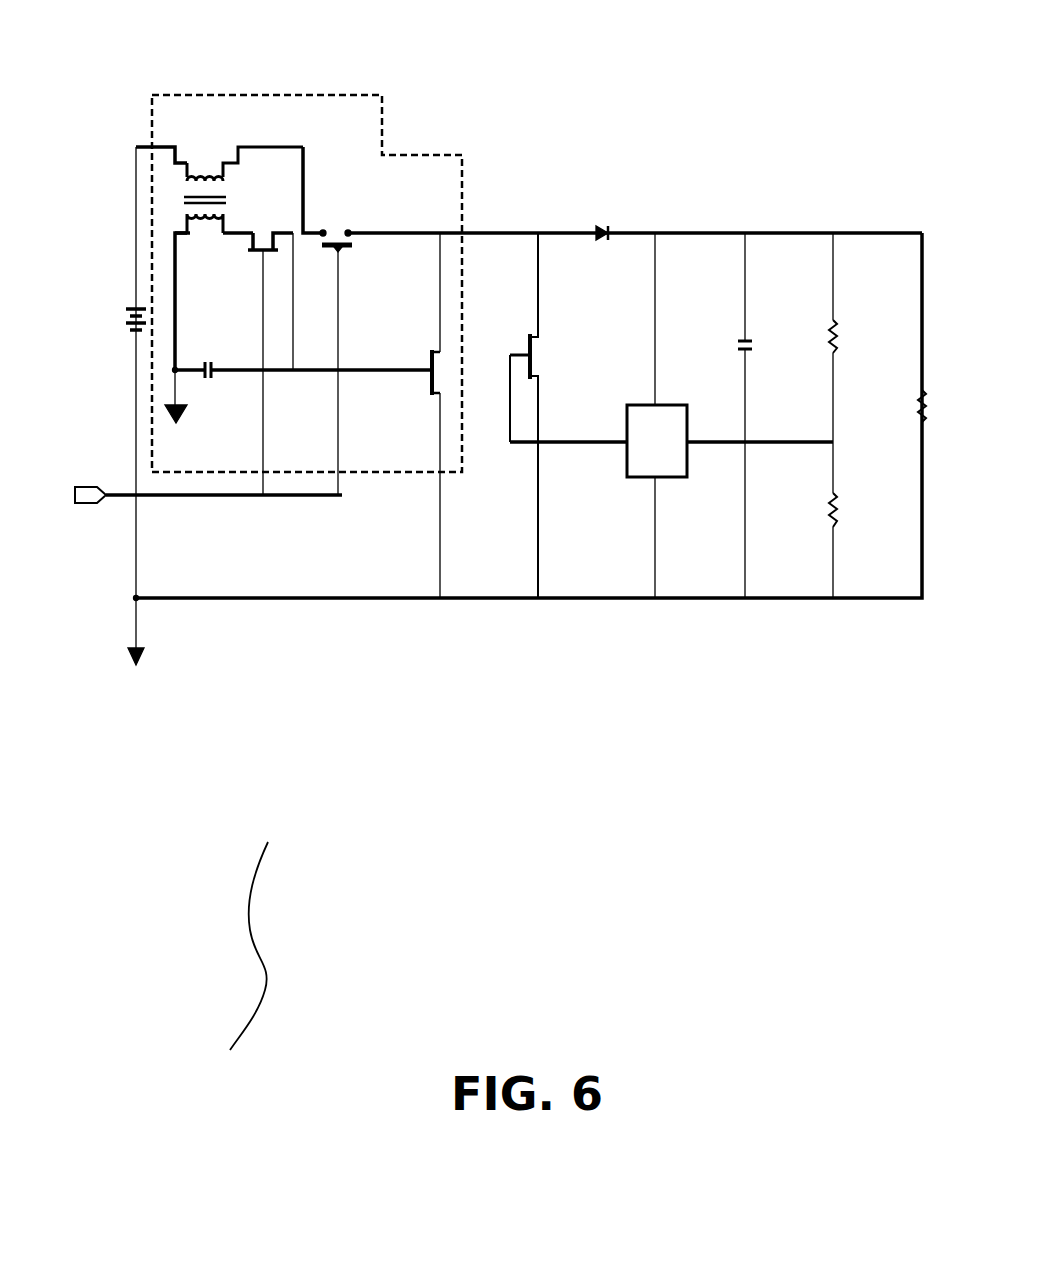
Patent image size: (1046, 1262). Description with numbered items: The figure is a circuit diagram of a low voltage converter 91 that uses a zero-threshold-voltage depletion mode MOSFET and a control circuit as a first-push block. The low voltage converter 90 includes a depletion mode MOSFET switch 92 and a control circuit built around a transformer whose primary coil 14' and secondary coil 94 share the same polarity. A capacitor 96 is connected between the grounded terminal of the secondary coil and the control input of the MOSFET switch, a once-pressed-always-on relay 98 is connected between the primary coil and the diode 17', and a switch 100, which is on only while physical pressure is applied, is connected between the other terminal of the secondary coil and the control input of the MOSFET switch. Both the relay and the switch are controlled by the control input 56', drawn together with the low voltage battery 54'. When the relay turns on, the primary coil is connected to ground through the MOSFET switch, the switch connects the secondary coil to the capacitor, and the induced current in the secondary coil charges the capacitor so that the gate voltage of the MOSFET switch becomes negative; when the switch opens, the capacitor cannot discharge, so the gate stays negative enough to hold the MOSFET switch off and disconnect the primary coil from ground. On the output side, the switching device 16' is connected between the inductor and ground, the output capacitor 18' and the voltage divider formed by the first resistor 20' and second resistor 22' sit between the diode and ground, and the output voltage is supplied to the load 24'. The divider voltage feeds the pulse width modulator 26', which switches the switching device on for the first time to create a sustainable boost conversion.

The primary coil L1 14' is at (257, 191).
The switch SW 100 is at (282, 203).
The once-pressed-always-on RELAY 98 is at (362, 207).
The low voltage converter 90 is at (462, 187).
The low voltage battery 54' is at (98, 200).
The secondary coil L2 94 is at (200, 250).
The capacitor C2 96 is at (215, 393).
The depletion mode MOSFET switch ZE_TH_DE 92 is at (438, 377).
The control input FP 56' is at (196, 586).
The switching device SW_1 16' is at (567, 402).
The diode D1 17' is at (674, 165).
The capacitor C1 18' is at (713, 415).
The first resistor R1 20' is at (850, 324).
The second resistor R2 22' is at (863, 520).
The load RL 24' is at (906, 376).
The Pulse Width Modulator PWM 26' is at (730, 415).
The low voltage converter 91 is at (234, 966).